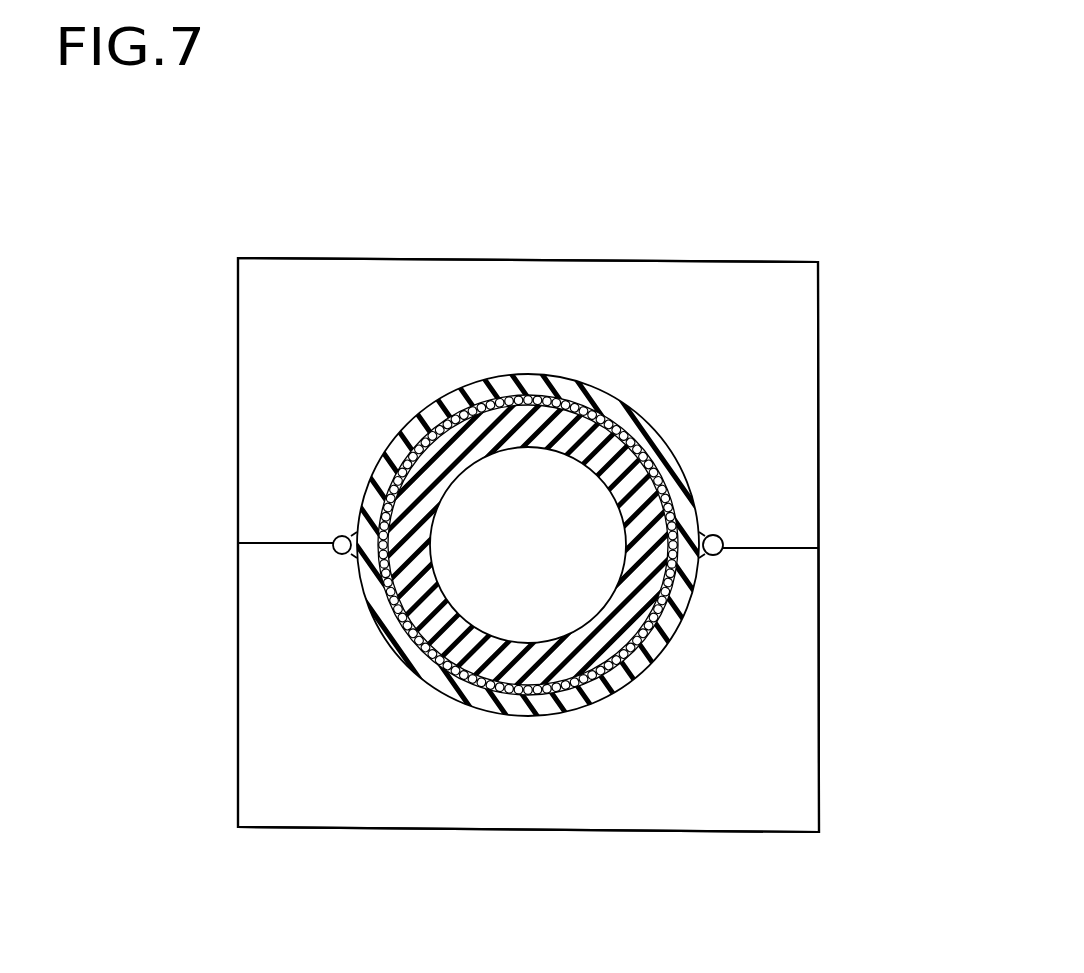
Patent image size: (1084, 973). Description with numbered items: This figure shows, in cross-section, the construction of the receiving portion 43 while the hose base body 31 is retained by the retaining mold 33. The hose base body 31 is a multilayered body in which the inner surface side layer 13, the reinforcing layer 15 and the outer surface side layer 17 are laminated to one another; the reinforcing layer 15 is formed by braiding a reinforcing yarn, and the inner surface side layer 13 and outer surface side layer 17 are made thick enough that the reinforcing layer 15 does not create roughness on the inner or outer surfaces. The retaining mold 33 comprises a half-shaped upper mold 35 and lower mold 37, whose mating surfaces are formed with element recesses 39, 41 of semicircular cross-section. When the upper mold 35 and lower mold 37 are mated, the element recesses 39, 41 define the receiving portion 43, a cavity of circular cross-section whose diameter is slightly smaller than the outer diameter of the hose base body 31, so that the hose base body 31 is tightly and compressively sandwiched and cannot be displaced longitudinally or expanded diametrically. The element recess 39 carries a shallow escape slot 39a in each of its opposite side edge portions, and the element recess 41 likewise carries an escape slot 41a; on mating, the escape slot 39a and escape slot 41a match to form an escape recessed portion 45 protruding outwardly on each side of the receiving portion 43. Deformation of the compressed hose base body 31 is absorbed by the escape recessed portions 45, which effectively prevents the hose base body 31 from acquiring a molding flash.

The inner surface side layer 13 is at (423, 468).
The reinforcing layer 15 is at (413, 420).
The outer surface side layer 17 is at (457, 393).
The hose base body 31 is at (536, 552).
The retaining mold 33 is at (500, 248).
The upper mold 35 is at (363, 293).
The lower mold 37 is at (763, 645).
The element recess 39 is at (444, 546).
The escape slot 39a is at (337, 548).
The element recess 41 is at (555, 546).
The escape slot 41a is at (723, 540).
The receiving portion 43 is at (615, 410).
The escape recessed portion 45 is at (352, 530).